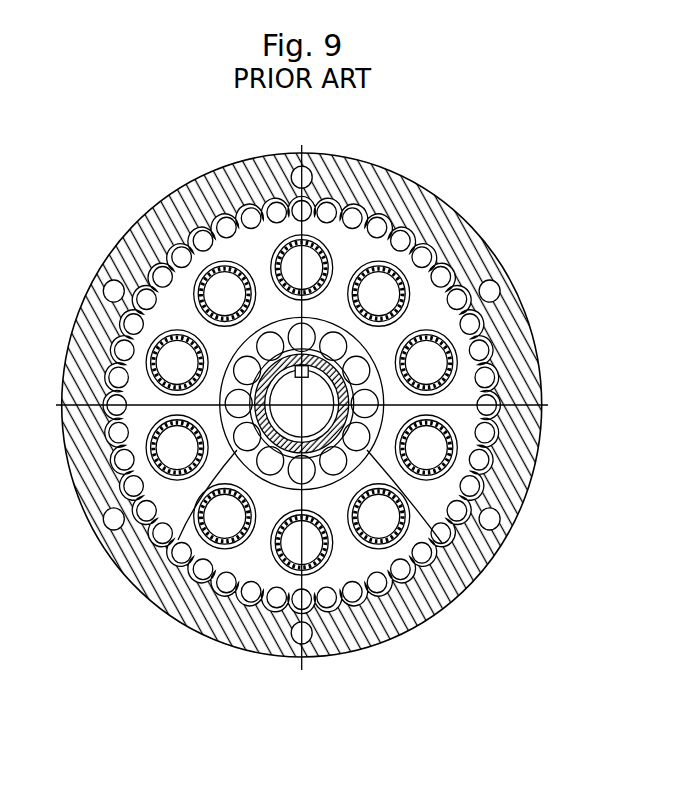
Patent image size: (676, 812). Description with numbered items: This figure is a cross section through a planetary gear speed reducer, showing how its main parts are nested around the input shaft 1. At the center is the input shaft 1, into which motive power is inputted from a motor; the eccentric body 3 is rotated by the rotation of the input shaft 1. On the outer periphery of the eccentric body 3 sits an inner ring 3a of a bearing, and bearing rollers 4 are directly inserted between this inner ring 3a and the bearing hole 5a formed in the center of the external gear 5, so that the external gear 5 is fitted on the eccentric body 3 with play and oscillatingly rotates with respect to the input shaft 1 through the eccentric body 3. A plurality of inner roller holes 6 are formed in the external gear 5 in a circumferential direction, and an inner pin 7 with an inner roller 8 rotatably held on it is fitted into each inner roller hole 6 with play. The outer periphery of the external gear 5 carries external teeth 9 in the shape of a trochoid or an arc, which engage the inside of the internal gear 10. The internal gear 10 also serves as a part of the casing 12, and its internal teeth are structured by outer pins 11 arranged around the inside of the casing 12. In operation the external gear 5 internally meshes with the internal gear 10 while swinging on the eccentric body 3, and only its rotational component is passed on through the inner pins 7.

The input shaft 1 is at (285, 483).
The eccentric body 3 is at (178, 540).
The inner ring 3a is at (448, 532).
The bearing rollers 4 is at (337, 462).
The external gear 5 is at (462, 373).
The bearing hole 5a is at (390, 402).
The inner roller holes 6 is at (372, 265).
The inner pin 7 is at (383, 302).
The inner roller 8 is at (396, 267).
The external teeth 9 is at (395, 568).
The internal gear 10 is at (450, 207).
The outer pins 11 is at (462, 302).
The casing 12 is at (468, 223).